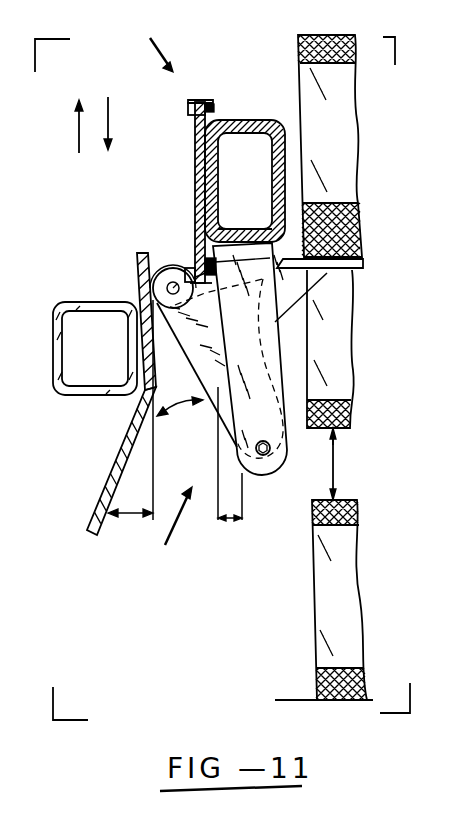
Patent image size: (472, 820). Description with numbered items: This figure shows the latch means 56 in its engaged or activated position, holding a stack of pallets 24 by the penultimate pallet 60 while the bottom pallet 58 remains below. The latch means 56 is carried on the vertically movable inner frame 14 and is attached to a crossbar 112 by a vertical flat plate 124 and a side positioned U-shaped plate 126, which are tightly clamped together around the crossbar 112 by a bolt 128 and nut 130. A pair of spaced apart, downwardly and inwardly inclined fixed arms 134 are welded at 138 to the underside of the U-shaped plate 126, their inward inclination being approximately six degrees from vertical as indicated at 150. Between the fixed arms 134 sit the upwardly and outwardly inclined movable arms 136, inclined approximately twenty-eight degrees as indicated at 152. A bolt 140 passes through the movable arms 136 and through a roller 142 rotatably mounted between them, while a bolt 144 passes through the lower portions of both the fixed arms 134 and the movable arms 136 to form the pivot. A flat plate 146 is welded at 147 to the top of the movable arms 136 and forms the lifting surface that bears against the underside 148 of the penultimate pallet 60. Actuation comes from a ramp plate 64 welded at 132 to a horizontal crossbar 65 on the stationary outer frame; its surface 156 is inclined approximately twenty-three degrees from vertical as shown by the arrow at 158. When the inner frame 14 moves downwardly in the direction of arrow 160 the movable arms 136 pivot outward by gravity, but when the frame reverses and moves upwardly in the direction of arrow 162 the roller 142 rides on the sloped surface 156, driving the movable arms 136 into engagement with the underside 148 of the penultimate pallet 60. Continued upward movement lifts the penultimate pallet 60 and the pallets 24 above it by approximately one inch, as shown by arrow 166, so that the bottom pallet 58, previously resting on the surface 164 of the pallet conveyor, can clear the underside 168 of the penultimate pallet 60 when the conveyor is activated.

The inner frame 14 is at (152, 41).
The stack of pallets 24 is at (340, 129).
The latch means 56 is at (165, 533).
The bottom pallet 58 is at (352, 612).
The penultimate pallet 60 is at (343, 344).
The ramp plate 64 is at (137, 266).
The crossbar 65 is at (61, 303).
The crossbar 112 is at (220, 160).
The vertical flat plate 124 is at (194, 160).
The U-shaped plate 126 is at (248, 120).
The bolt 128 is at (190, 104).
The nut 130 is at (200, 100).
The weld 132 is at (137, 297).
The fixed arm 134 is at (263, 335).
The movable arm 136 is at (210, 347).
The weld 138 is at (240, 258).
The bolt 140 is at (163, 276).
The roller 142 is at (192, 268).
The bolt 144 is at (283, 469).
The flat plate 146 is at (352, 281).
The weld 147 is at (352, 312).
The underside 148 is at (362, 263).
The inward angle 150 is at (232, 521).
The outward angle 152 is at (186, 413).
The ramp surface 156 is at (107, 477).
The ramp angle 158 is at (122, 516).
The downward direction arrow 160 is at (108, 97).
The upward direction arrow 162 is at (79, 127).
The conveyor surface 164 is at (290, 700).
The lift distance arrow 166 is at (337, 471).
The underside 168 is at (336, 433).